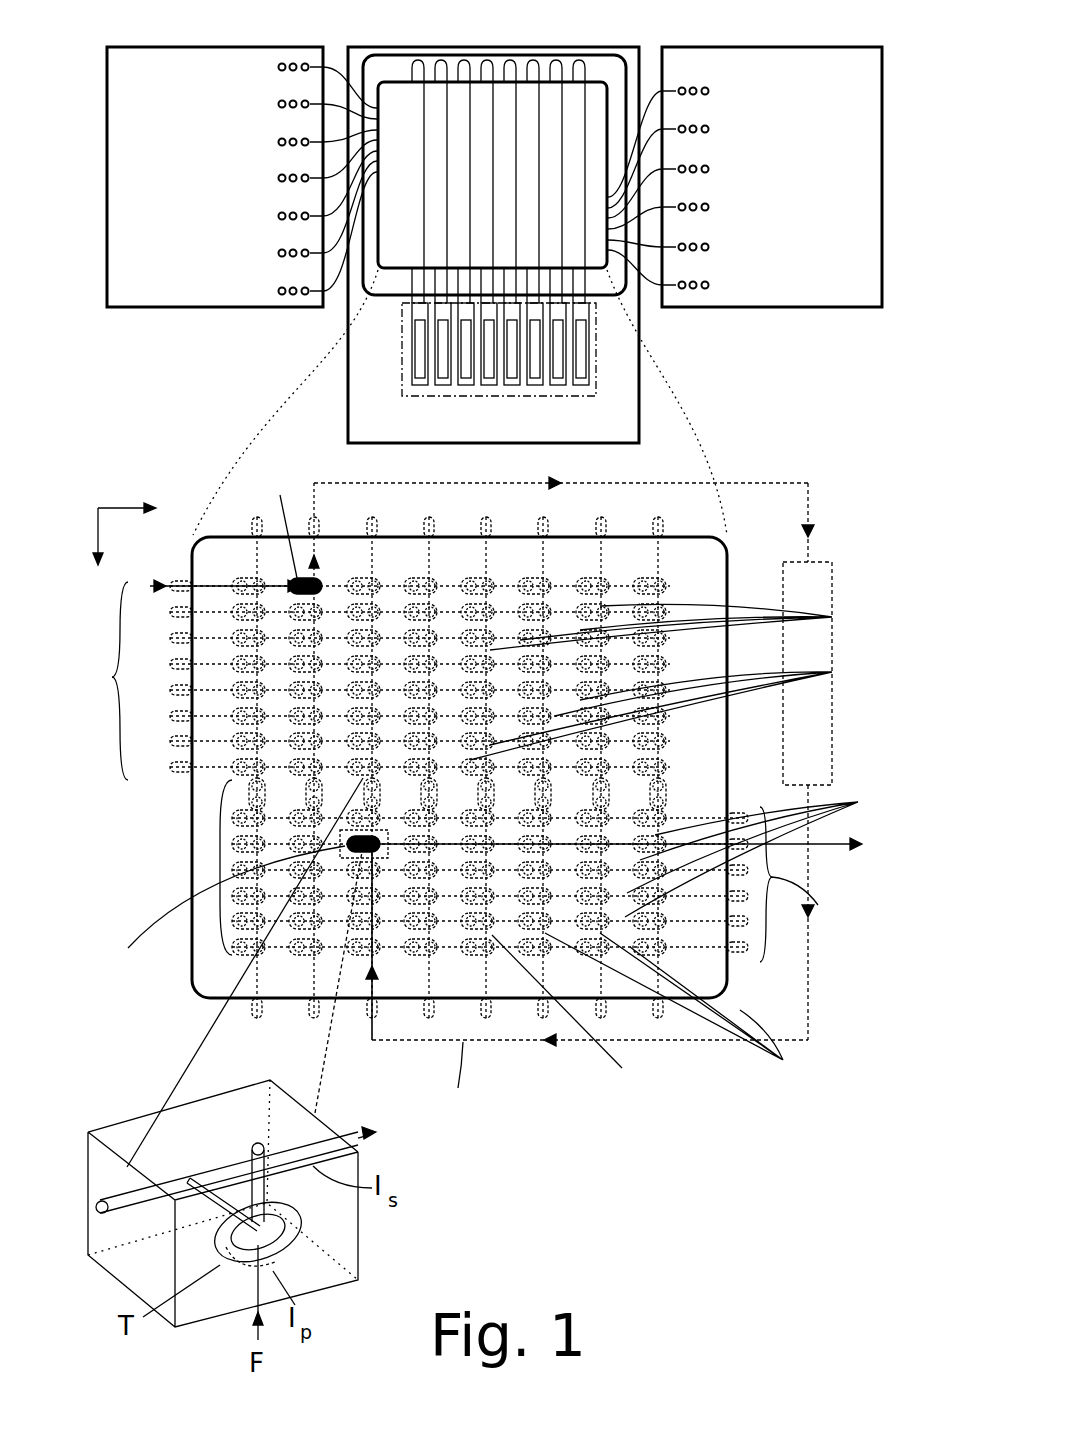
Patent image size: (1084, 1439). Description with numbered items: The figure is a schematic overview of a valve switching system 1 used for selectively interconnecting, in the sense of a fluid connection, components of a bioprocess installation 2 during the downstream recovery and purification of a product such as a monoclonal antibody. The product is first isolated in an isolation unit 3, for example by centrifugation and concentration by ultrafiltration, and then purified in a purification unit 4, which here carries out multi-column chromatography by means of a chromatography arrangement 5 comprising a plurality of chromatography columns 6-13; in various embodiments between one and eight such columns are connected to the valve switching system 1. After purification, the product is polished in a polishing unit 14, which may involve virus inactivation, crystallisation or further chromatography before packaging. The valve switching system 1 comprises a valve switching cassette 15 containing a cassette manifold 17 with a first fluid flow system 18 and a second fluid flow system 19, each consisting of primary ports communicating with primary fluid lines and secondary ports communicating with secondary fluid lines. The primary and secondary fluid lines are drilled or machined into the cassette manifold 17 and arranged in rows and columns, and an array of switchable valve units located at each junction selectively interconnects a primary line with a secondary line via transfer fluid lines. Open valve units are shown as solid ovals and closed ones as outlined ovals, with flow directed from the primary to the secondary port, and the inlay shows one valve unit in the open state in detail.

The valve switching system 1 is at (737, 15).
The bioprocess installation 2 is at (878, 7).
The isolation unit 3 is at (236, 308).
The purification unit 4 is at (348, 340).
The chromatography arrangement 5 is at (596, 398).
The chromatography columns 6-13 is at (585, 404).
The polishing unit 14 is at (742, 309).
The valve switching cassette 15 is at (623, 57).
The cassette manifold 17 is at (208, 537).
The first fluid flow system 18 is at (190, 722).
The second fluid flow system 19 is at (220, 873).